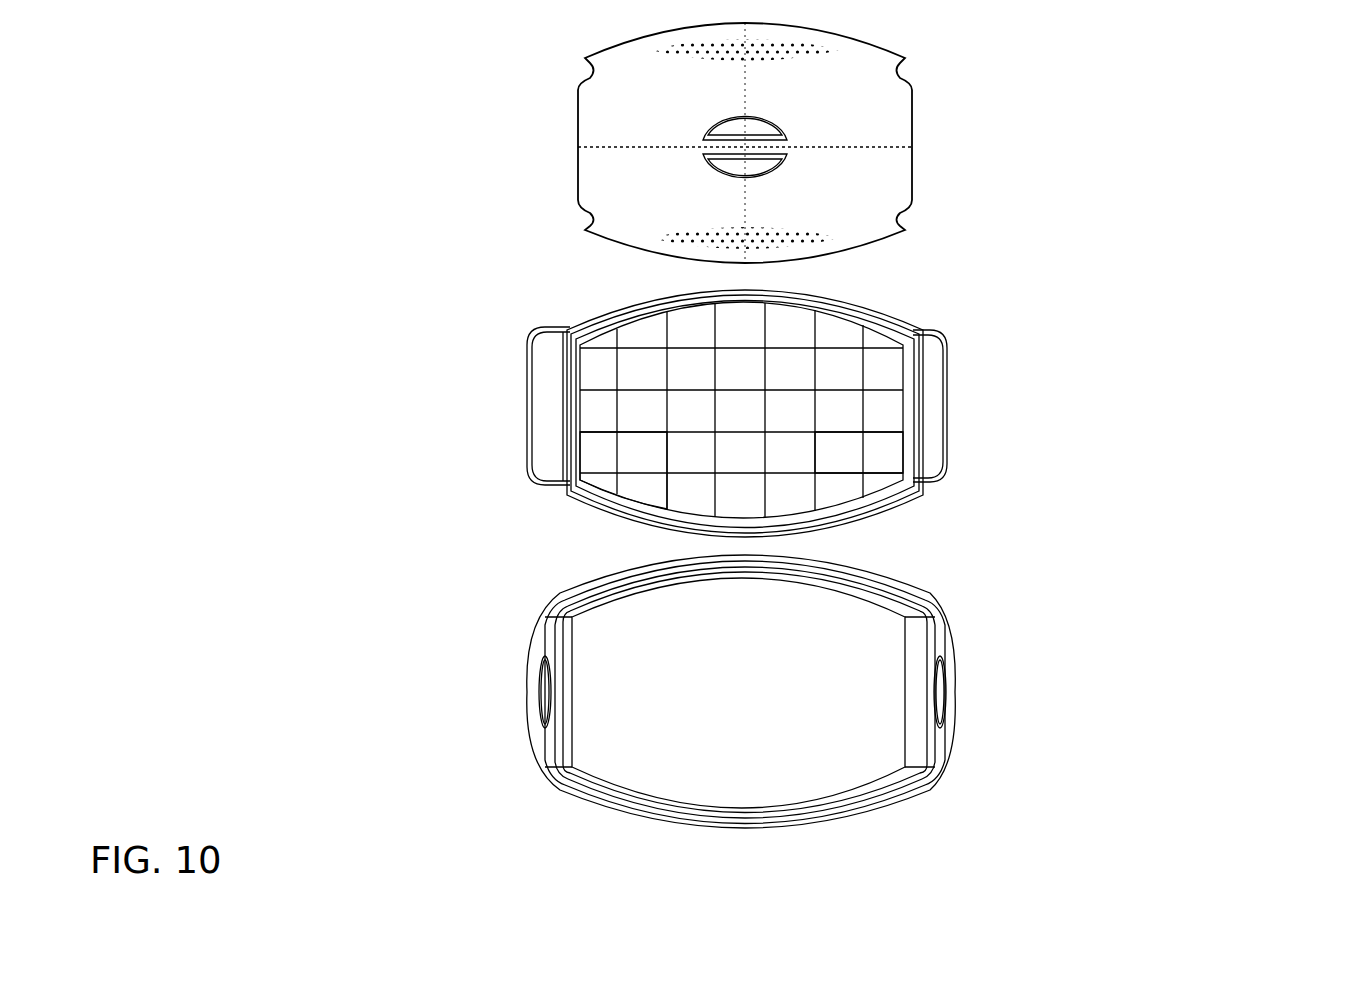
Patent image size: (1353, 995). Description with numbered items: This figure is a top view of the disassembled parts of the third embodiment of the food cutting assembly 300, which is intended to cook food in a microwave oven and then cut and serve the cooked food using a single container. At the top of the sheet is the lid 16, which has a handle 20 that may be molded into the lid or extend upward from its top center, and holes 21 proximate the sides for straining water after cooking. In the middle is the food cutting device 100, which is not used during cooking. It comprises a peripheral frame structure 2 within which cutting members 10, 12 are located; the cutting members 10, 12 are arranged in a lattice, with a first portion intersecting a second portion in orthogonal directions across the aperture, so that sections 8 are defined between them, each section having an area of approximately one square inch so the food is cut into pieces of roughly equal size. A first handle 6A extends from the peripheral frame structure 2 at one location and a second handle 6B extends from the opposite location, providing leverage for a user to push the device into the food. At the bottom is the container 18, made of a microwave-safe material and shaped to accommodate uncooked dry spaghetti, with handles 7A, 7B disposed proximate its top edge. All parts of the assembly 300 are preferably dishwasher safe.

The food cutting assembly 300 is at (1345, 58).
The lid 16 is at (712, 143).
The handle 20 is at (748, 133).
The holes 21 is at (776, 236).
The food cutting device 100 is at (612, 408).
The peripheral frame structure 2 is at (877, 510).
The cutting member 10 is at (643, 348).
The cutting member 12 is at (663, 450).
The sections 8 is at (842, 452).
The first handle 6A is at (540, 337).
The second handle 6B is at (940, 341).
The container 18 is at (638, 691).
The handle 7A is at (542, 677).
The handle 7B is at (946, 668).